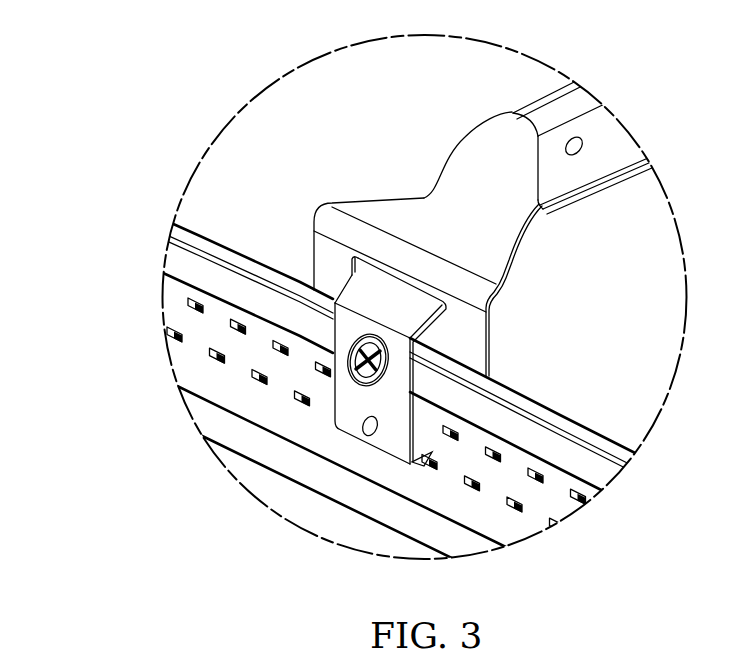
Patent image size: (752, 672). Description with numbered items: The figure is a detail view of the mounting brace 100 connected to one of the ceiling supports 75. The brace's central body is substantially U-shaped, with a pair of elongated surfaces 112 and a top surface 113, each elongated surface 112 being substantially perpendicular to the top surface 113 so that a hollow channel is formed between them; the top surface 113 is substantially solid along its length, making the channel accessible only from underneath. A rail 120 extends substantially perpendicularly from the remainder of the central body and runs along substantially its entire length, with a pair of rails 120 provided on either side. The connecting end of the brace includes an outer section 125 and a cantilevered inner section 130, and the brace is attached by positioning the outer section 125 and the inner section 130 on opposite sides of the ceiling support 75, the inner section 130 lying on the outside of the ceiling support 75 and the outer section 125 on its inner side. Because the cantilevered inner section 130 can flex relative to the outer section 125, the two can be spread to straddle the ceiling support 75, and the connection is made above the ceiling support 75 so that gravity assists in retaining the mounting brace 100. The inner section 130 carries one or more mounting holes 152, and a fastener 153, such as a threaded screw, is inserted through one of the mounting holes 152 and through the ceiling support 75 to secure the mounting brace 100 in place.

The ceiling support 75 is at (205, 438).
The mounting brace 100 is at (117, 85).
The elongated surface 112 is at (596, 141).
The top surface 113 is at (535, 102).
The rail 120 is at (578, 197).
The outer section 125 is at (328, 259).
The inner section 130 is at (371, 365).
The mounting hole 152 is at (428, 458).
The fastener 153 is at (357, 378).